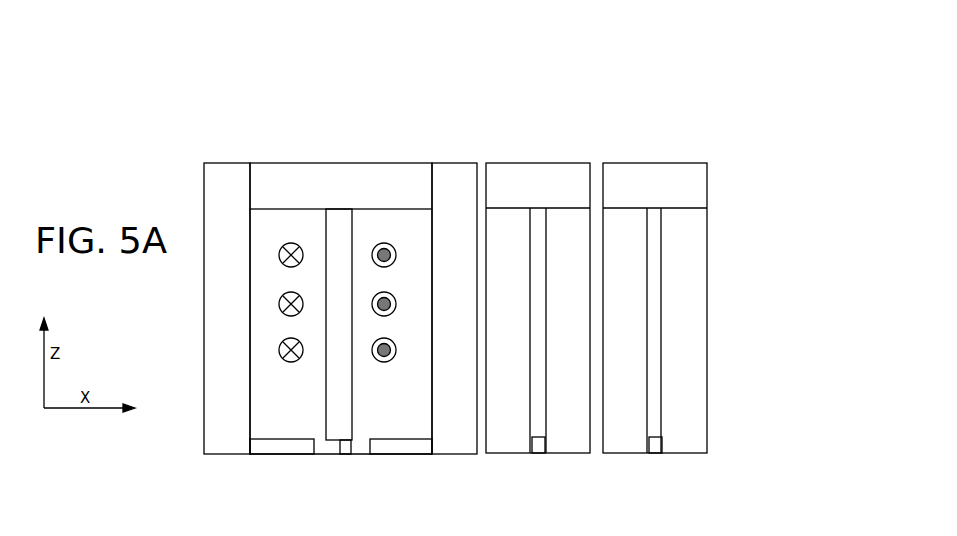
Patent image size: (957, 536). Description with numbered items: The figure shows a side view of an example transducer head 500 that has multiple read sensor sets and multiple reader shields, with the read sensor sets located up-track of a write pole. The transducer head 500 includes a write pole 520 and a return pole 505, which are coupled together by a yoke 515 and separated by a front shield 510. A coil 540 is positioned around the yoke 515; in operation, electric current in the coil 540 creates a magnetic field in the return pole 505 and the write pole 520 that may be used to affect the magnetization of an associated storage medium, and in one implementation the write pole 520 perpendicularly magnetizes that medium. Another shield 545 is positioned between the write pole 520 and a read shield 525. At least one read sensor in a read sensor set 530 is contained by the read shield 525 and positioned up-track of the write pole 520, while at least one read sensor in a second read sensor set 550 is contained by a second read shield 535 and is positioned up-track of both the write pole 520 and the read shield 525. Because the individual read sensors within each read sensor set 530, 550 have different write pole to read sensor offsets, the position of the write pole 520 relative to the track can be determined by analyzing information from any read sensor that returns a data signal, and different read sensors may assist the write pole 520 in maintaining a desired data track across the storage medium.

The transducer head 500 is at (703, 73).
The return pole 505 is at (204, 400).
The front shield 510 is at (286, 454).
The yoke 515 is at (333, 454).
The write pole 520 is at (347, 454).
The shield 545 is at (415, 454).
The coil 540 is at (374, 220).
The read shield 525 is at (638, 500).
The read sensor set 530 is at (538, 453).
The read shield 535 is at (780, 505).
The read sensor set 550 is at (656, 453).